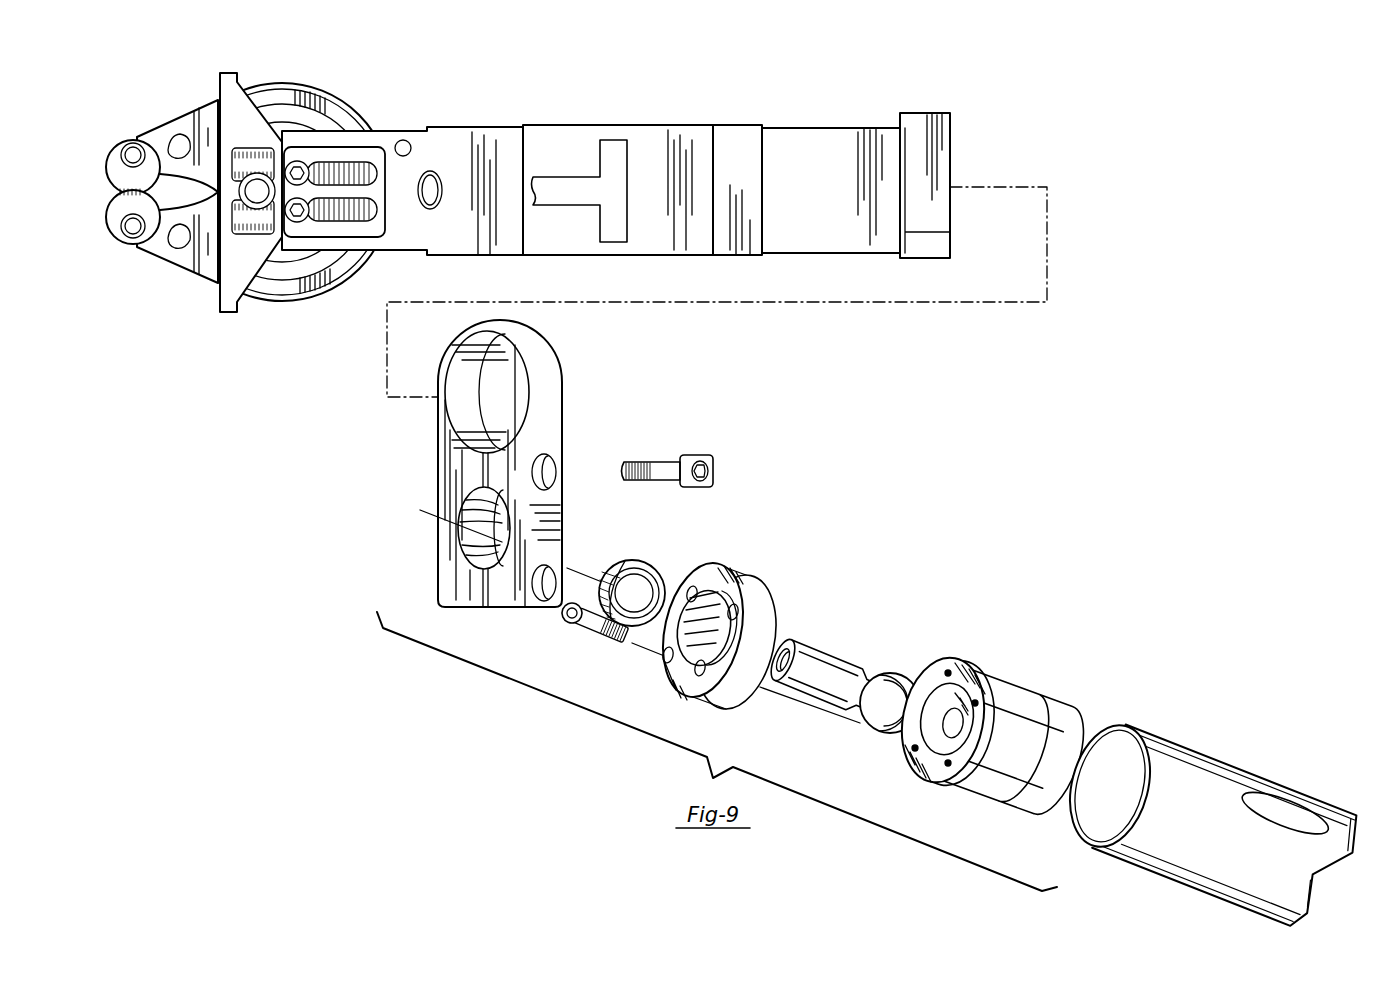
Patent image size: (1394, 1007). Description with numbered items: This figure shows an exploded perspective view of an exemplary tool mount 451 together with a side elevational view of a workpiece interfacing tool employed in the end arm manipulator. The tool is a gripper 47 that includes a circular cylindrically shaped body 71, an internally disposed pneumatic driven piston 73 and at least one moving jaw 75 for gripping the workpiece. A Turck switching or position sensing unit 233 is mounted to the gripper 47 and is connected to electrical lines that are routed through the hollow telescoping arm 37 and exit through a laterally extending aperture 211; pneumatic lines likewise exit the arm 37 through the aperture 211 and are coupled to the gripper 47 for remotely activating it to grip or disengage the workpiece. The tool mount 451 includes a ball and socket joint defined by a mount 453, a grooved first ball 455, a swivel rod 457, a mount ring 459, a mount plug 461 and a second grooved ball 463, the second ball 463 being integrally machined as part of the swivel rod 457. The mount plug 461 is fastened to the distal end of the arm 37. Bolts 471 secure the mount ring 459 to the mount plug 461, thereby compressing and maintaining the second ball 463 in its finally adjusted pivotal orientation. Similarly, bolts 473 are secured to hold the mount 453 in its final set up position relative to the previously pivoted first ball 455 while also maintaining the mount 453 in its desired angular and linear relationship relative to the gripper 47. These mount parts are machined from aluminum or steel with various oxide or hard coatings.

The moving jaw 75 is at (320, 113).
The circular cylindrically shaped body 71 is at (547, 135).
The pneumatic driven piston 73 is at (620, 167).
The gripper 47 is at (782, 170).
The switching or position sensing unit 233 is at (935, 148).
The mount 453 is at (458, 583).
The bolts 473 is at (668, 458).
The grooved first ball 455 is at (652, 572).
The bolts 471 is at (587, 627).
The mount ring 459 is at (753, 587).
The swivel rod 457 is at (822, 658).
The second grooved ball 463 is at (902, 688).
The mount plug 461 is at (1010, 690).
The tool mount 451 is at (1075, 500).
The laterally extending aperture 211 is at (1275, 823).
The telescoping arm 37 is at (1205, 815).